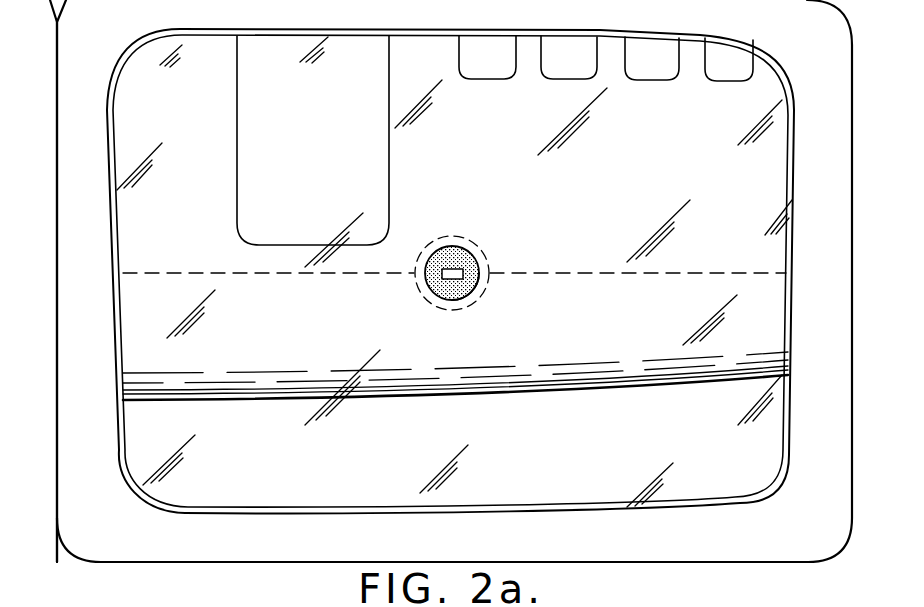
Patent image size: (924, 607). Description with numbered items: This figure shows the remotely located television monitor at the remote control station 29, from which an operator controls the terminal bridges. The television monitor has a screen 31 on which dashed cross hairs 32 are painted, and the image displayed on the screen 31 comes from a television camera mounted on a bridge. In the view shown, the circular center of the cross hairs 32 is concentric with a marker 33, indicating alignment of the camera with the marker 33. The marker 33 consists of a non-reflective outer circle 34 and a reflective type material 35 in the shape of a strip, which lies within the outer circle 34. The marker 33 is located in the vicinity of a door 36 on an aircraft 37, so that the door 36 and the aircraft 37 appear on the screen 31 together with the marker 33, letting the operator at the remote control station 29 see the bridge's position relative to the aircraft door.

The remote control station 29 is at (606, 566).
The screen 31 is at (777, 70).
The cross hairs 32 is at (414, 285).
The marker 33 is at (474, 250).
The non-reflective outer circle 34 is at (472, 290).
The reflective type material 35 is at (440, 254).
The door 36 is at (243, 150).
The aircraft 37 is at (490, 397).